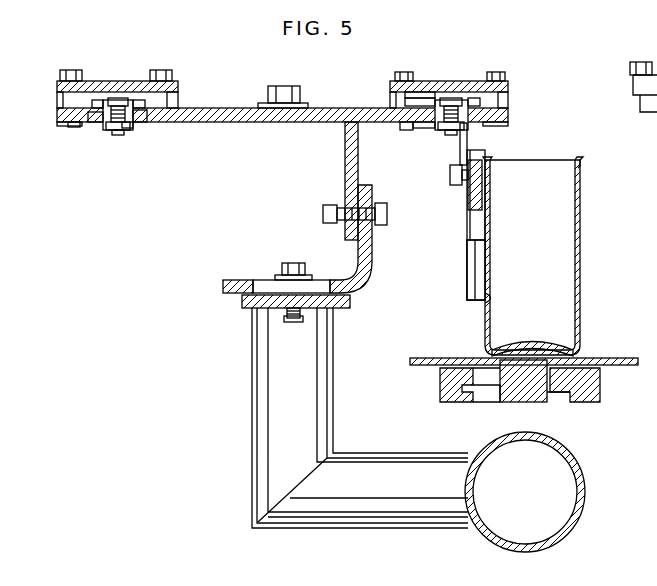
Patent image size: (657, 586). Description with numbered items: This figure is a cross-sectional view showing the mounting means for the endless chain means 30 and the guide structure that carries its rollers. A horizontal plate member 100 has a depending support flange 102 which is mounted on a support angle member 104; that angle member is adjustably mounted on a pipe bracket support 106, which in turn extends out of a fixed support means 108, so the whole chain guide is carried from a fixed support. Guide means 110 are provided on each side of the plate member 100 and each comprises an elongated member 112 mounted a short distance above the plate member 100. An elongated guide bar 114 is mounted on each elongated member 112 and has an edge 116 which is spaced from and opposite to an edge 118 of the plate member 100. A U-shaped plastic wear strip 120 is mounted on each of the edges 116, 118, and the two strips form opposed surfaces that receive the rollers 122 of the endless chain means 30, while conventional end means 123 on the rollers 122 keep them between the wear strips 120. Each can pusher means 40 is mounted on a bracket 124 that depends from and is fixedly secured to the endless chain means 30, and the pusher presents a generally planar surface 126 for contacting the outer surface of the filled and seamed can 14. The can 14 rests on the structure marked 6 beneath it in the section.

The floor panel 6 is at (603, 357).
The filled and seamed can 14 is at (580, 262).
The endless chain means 30 is at (470, 98).
The can pusher means 40 is at (476, 283).
The plate member 100 is at (212, 120).
The depending support flange 102 is at (346, 157).
The support angle member 104 is at (366, 287).
The pipe bracket support 106 is at (268, 428).
The fixed support means 108 is at (586, 493).
The guide means 110 is at (80, 130).
The elongated member 112 is at (114, 80).
The elongated guide bar 114 is at (60, 120).
The edge 116 is at (100, 124).
The edge 118 is at (148, 124).
The U-shaped plastic wear strip 120 is at (126, 102).
The rollers 122 is at (116, 134).
The end means 123 is at (142, 104).
The bracket 124 is at (456, 176).
The generally planar surface 126 is at (483, 303).